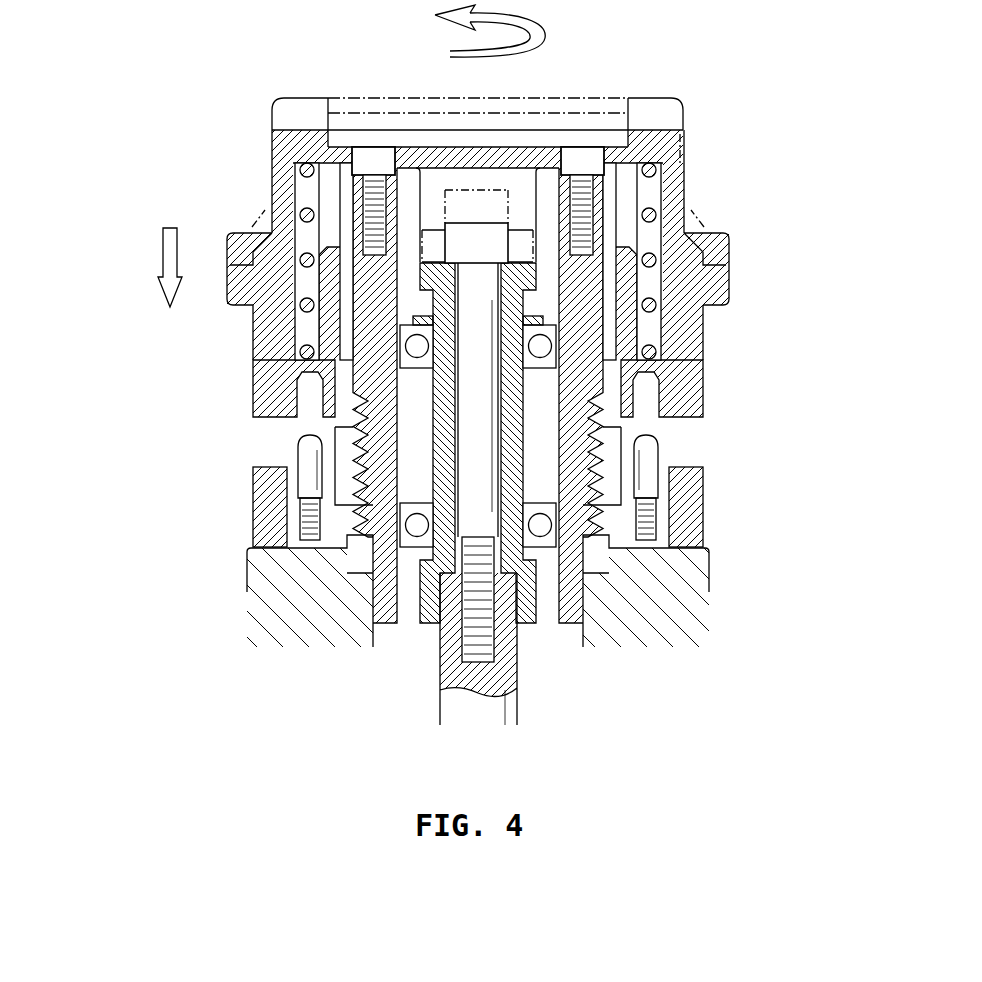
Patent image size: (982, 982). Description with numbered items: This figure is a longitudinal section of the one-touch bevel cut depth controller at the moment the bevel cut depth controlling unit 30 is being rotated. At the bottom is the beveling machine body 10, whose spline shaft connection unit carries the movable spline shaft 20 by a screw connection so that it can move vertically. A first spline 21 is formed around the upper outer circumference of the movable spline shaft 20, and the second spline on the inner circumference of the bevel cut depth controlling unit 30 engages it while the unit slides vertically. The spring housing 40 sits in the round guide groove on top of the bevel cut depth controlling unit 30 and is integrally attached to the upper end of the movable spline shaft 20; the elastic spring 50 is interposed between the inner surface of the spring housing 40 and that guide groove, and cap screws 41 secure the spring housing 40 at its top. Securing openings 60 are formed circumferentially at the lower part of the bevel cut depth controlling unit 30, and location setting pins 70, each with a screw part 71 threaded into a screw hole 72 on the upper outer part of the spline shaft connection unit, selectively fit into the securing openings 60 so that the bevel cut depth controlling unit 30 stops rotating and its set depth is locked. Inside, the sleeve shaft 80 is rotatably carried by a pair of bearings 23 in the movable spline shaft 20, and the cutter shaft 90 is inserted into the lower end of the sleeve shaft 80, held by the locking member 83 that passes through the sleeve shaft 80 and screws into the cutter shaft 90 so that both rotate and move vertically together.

The beveling machine body 10 is at (313, 562).
The movable spline shaft 20 is at (720, 290).
The first spline 21 is at (348, 213).
The bearing 23 is at (545, 347).
The bevel cut depth controlling unit 30 is at (265, 332).
The spring housing 40 is at (687, 116).
The cap screw 41 is at (378, 162).
The elastic spring 50 is at (650, 213).
The securing opening 60 is at (648, 397).
The location setting pin 70 is at (298, 452).
The screw part 71 is at (300, 508).
The screw hole 72 is at (253, 548).
The sleeve shaft 80 is at (653, 523).
The locking member 83 is at (478, 243).
The cutter shaft 90 is at (487, 693).